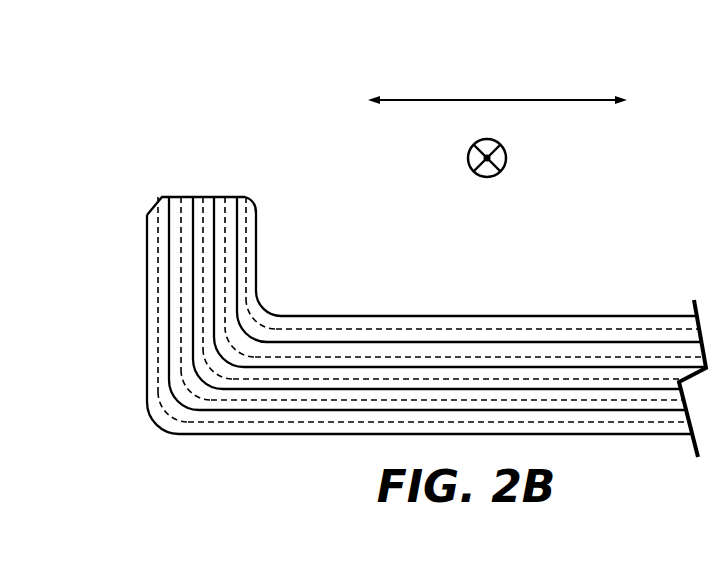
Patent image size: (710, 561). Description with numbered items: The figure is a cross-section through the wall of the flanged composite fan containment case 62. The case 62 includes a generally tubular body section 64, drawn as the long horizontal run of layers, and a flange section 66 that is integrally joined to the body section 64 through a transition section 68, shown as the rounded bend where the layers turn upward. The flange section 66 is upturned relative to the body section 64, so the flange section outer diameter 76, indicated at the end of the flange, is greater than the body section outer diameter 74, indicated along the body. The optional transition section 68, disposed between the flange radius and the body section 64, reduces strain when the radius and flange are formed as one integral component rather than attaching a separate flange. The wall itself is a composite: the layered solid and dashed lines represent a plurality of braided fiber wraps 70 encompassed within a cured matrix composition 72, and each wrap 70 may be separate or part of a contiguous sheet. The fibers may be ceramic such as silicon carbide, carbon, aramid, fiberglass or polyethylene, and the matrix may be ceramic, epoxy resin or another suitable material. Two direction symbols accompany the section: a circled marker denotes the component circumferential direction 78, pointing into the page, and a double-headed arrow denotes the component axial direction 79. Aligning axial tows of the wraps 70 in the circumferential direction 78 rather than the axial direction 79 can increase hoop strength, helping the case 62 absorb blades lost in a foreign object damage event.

The fan containment case 62 is at (650, 211).
The body section 64 is at (583, 280).
The flange section 66 is at (268, 188).
The transition section 68 is at (290, 308).
The wraps 70 is at (203, 197).
The matrix composition 72 is at (382, 350).
The body section outer diameter 74 is at (518, 303).
The flange section outer diameter 76 is at (138, 200).
The component circumferential direction 78 is at (508, 158).
The component axial direction 79 is at (476, 100).